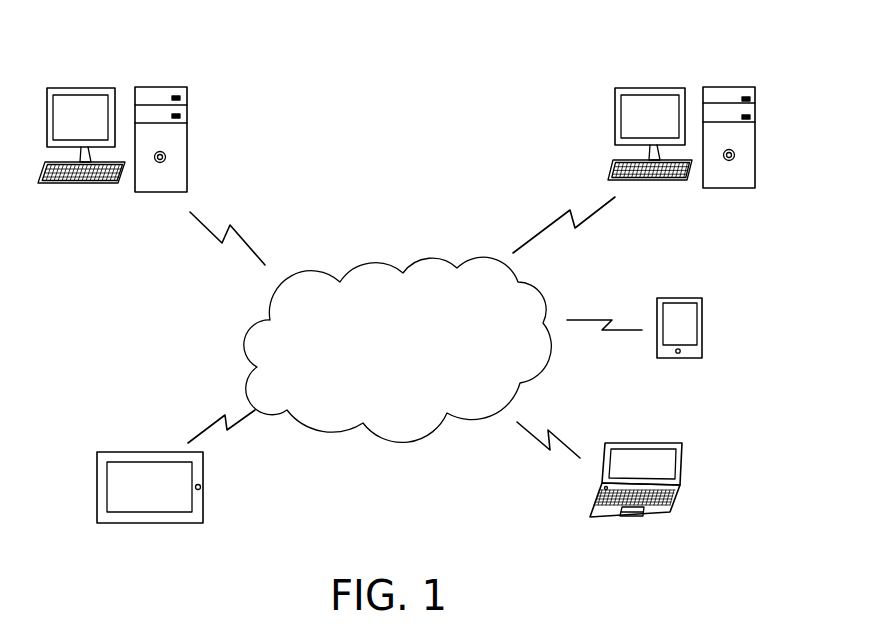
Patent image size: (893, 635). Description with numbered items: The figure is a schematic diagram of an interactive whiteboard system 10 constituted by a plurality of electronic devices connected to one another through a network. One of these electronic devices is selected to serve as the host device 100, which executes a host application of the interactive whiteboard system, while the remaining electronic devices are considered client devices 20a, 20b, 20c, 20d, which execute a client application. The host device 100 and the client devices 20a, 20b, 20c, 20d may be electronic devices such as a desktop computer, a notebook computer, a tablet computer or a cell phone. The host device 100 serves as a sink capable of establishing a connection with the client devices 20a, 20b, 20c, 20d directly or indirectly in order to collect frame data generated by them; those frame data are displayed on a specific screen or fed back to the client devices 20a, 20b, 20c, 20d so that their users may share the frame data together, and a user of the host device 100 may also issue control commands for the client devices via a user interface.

The host device 100 is at (123, 87).
The client device 20a is at (693, 83).
The client device 20b is at (685, 473).
The client device 20c is at (703, 322).
The client device 20d is at (212, 492).
The interactive whiteboard system 10 is at (752, 562).